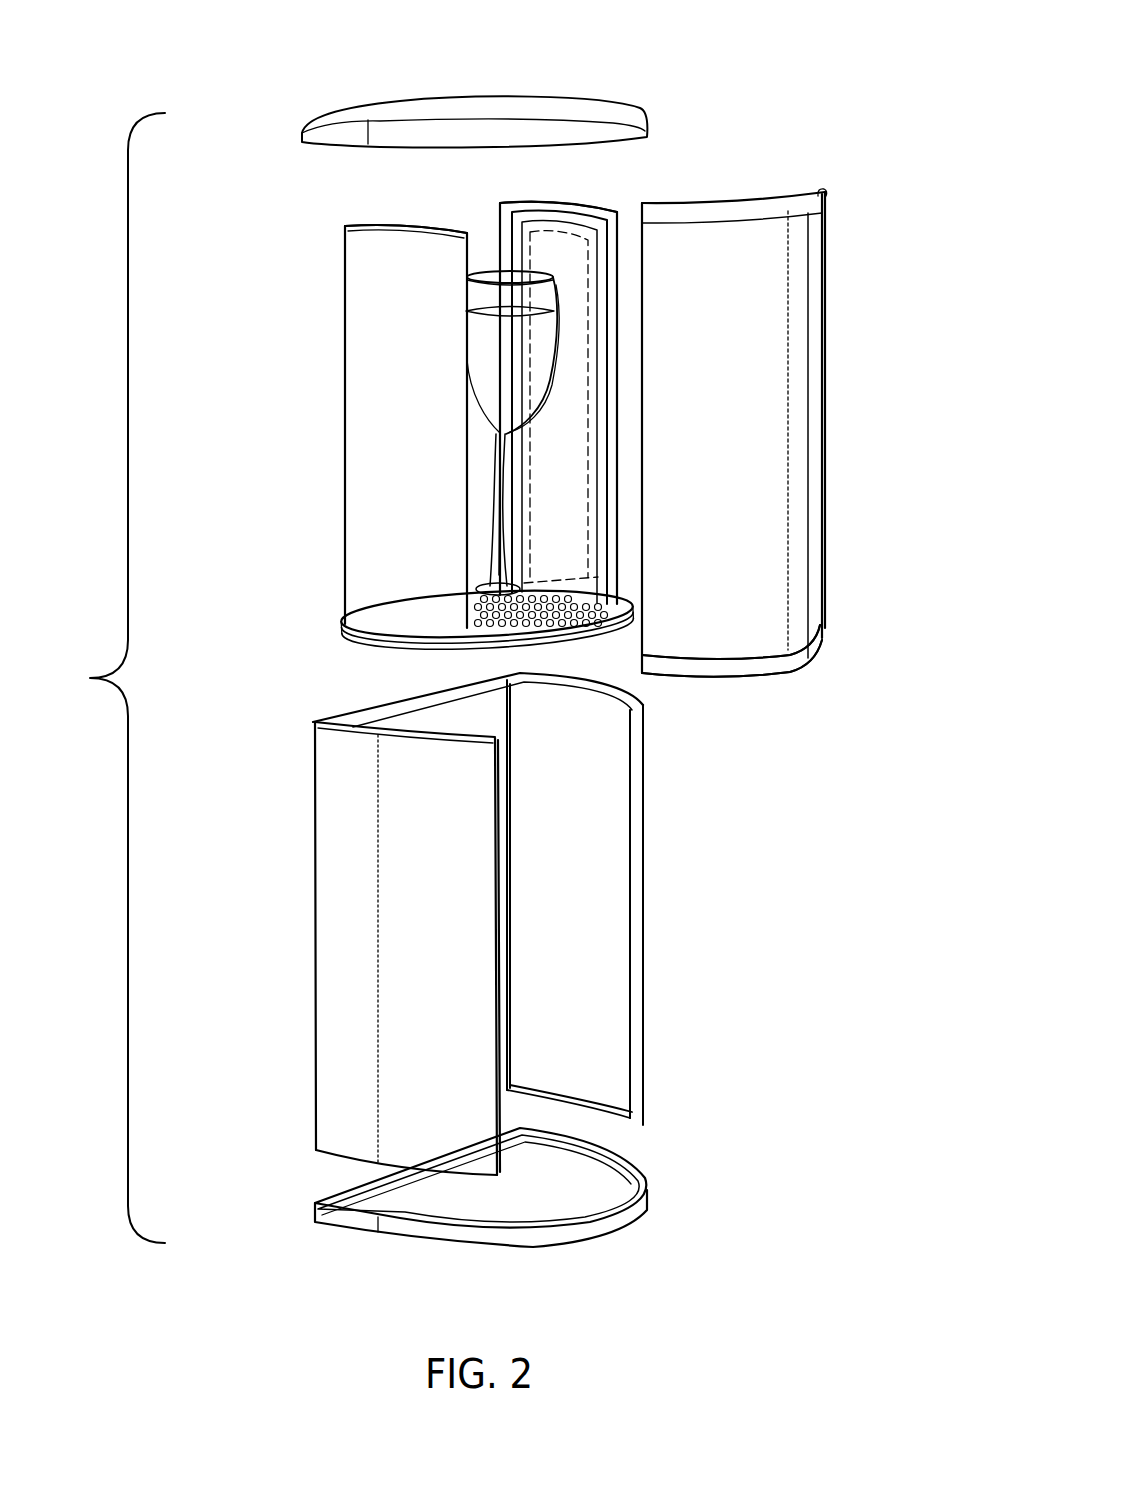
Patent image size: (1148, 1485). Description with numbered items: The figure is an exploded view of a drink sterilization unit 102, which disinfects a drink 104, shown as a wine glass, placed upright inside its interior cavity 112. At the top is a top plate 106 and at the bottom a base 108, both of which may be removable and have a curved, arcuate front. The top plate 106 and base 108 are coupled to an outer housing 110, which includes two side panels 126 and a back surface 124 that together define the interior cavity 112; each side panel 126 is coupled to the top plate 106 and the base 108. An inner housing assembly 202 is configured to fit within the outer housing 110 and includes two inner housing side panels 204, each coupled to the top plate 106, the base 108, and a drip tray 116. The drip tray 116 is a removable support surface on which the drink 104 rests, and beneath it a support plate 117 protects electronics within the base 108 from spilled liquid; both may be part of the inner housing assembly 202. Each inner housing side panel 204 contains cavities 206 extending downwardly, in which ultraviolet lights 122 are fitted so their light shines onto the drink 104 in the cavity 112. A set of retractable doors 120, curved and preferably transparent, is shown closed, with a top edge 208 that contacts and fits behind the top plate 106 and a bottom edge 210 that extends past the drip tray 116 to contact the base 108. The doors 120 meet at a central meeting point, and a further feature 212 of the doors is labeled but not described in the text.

The drink sterilization unit 102 is at (203, 80).
The drink 104 is at (533, 300).
The top plate 106 is at (557, 104).
The base 108 is at (398, 1228).
The outer housing 110 is at (335, 848).
The interior cavity 112 is at (533, 843).
The drip tray 116 is at (553, 711).
The support plate 117 is at (587, 643).
The set of retractable doors 120 is at (805, 466).
The ultraviolet lights 122 is at (597, 222).
The back surface 124 is at (408, 718).
The side panels 126 is at (428, 945).
The inner housing assembly 202 is at (322, 333).
The inner housing side panels 204 is at (383, 430).
The cavities 206 is at (557, 203).
The top edge 208 is at (789, 412).
The bottom edge 210 is at (732, 651).
The shell seam 212 is at (815, 350).